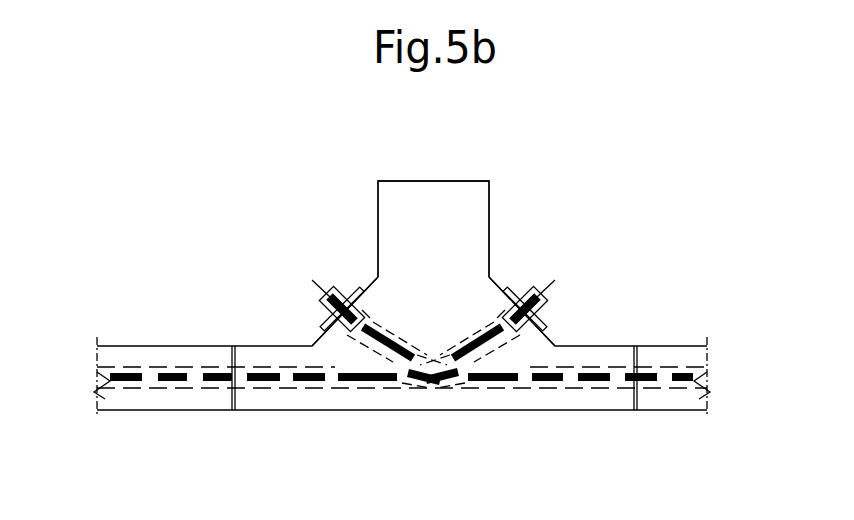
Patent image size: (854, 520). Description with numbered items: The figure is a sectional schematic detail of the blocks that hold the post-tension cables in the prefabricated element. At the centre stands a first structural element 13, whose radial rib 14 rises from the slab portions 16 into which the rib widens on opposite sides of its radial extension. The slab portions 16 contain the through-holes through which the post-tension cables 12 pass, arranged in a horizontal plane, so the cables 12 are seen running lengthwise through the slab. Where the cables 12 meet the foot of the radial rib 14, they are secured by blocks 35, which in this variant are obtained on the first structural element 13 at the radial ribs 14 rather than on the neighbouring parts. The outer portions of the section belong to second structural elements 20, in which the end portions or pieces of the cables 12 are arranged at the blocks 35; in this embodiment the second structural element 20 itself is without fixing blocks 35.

The first structural element 13 is at (500, 192).
The radial ribs 14 is at (377, 213).
The post-tension cables 12 is at (218, 373).
The slab portions 16 is at (263, 346).
The second structural element 20 is at (145, 343).
The blocks 35 is at (333, 333).